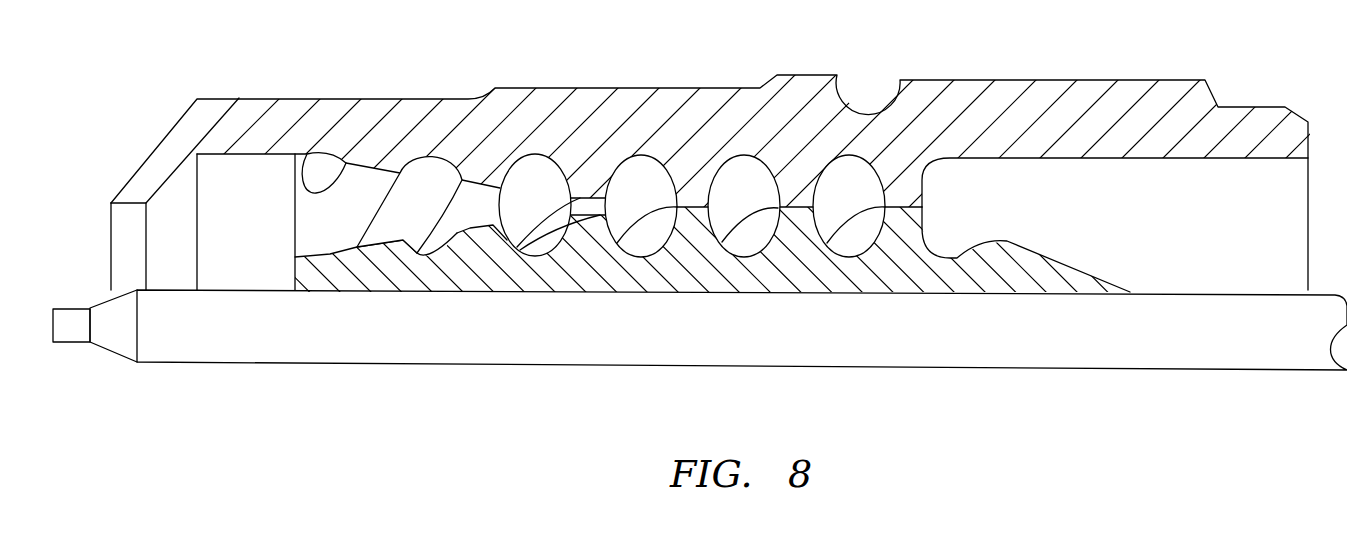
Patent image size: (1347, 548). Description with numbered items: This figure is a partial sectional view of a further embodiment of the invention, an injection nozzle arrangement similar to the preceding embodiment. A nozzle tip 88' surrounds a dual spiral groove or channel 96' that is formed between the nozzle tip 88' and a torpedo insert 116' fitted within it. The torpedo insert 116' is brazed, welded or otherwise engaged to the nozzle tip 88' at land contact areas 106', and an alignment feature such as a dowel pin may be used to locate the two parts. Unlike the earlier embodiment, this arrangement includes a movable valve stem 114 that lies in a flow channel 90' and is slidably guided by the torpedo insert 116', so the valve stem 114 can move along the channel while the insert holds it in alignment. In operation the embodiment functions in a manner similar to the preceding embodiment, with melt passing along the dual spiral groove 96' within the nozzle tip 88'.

The nozzle tip 88' is at (729, 157).
The dual spiral groove or channel 96' is at (593, 149).
The land contact areas 106' is at (799, 125).
The torpedo insert 116' is at (680, 279).
The movable valve stem 114 is at (459, 343).
The flow channel 90' is at (1235, 224).